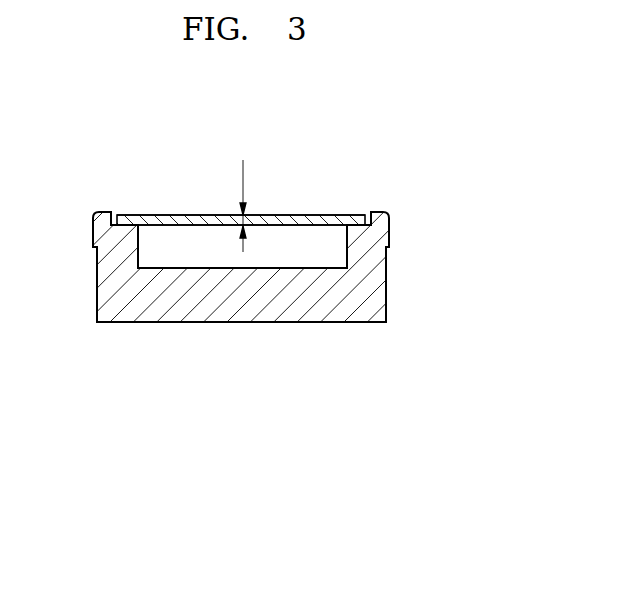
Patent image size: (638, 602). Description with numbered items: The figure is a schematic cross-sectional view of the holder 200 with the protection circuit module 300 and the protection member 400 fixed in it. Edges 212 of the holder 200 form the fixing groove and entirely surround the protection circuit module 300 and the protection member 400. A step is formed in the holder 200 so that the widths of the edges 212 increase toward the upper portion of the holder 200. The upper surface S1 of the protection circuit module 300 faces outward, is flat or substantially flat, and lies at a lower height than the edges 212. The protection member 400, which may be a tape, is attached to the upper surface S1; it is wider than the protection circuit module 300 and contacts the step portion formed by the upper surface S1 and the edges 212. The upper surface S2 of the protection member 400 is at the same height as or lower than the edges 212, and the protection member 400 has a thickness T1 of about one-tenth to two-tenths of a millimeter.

The holder 200 is at (257, 255).
The edges 212 is at (380, 288).
The protection circuit module 300 is at (292, 253).
The protection member 400 is at (303, 215).
The upper surface of the protection circuit module S1 is at (182, 227).
The upper surface of the protection member S2 is at (183, 215).
The thickness T1 is at (230, 206).